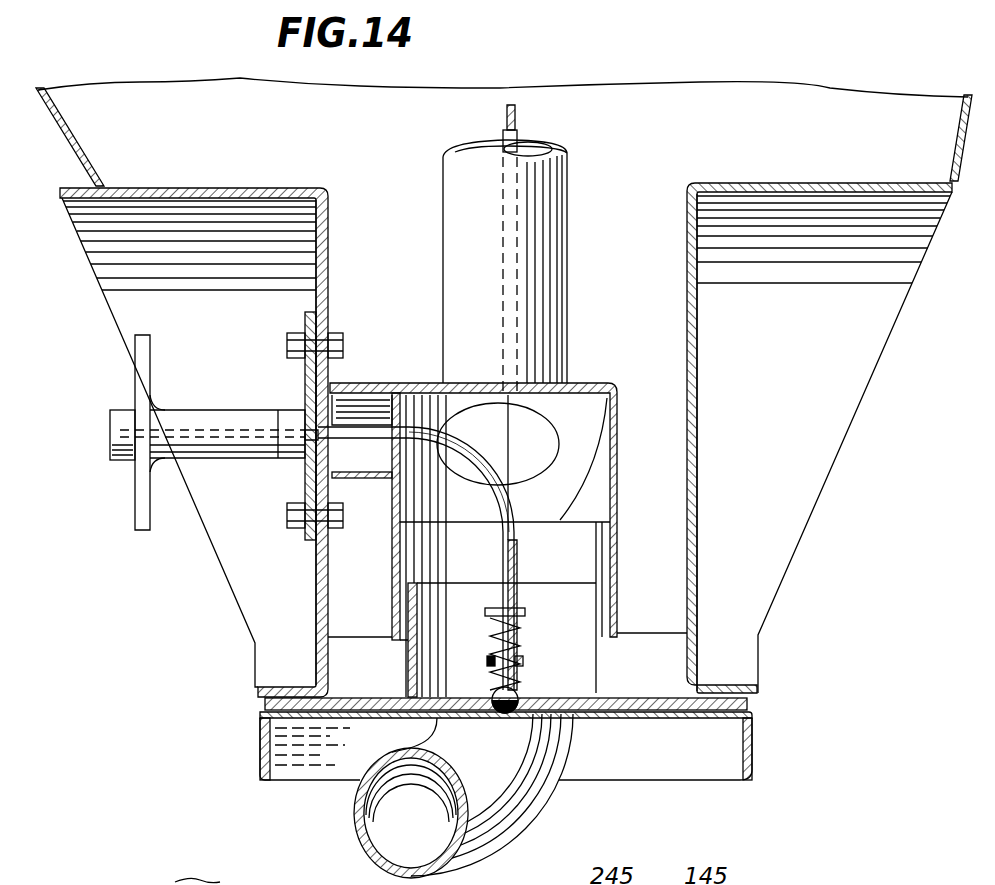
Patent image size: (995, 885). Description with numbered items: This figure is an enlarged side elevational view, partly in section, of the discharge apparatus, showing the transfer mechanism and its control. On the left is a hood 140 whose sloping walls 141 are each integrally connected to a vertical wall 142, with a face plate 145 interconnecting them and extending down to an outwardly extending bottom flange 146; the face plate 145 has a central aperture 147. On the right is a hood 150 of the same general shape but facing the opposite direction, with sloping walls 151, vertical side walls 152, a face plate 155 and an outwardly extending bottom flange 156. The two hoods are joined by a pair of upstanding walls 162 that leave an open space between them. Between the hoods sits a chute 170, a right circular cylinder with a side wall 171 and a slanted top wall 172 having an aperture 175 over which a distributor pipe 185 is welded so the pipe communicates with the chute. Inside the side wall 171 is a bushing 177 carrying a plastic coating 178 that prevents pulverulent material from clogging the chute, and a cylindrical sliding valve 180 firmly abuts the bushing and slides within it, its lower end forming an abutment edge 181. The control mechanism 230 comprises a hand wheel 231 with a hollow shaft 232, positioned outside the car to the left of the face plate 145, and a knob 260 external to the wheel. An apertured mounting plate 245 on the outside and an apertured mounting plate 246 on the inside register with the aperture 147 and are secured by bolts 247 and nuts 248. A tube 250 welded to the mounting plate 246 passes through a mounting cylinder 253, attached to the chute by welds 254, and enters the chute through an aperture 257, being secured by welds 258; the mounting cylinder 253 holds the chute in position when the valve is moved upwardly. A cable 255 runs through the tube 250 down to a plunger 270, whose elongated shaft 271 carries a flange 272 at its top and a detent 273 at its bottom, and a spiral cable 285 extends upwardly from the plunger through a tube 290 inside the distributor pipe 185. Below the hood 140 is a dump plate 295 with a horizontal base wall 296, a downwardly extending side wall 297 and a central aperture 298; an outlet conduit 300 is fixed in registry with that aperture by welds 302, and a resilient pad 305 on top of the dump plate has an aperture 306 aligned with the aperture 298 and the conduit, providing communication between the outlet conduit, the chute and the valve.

The hood 140 is at (245, 168).
The sloping walls 141 is at (235, 256).
The vertical wall 142 is at (267, 548).
The face plate 145 is at (330, 262).
The bottom flange 146 is at (265, 690).
The aperture 147 is at (338, 400).
The hood 150 is at (858, 168).
The sloping walls 151 is at (829, 263).
The vertical side wall 152 is at (783, 483).
The face plate 155 is at (697, 352).
The bottom flange 156 is at (757, 683).
The upstanding walls 162 is at (377, 673).
The chute 170 is at (622, 368).
The side wall 171 is at (620, 577).
The slanted top wall 172 is at (620, 407).
The aperture 175 is at (553, 462).
The bushing 177 is at (605, 536).
The coating 178 is at (605, 512).
The sliding valve 180 is at (392, 600).
The abutment edge 181 is at (617, 718).
The distributor pipe 185 is at (553, 287).
The control mechanism 230 is at (243, 366).
The hand wheel 231 is at (143, 522).
The hollow shaft 232 is at (207, 415).
The apertured mounting plate 245 is at (305, 382).
The apertured mounting plate 246 is at (332, 326).
The bolts 247 is at (343, 340).
The nuts 248 is at (298, 332).
The tube 250 is at (405, 406).
The mounting cylinder 253 is at (356, 468).
The welds 254 is at (392, 482).
The cable 255 is at (236, 440).
The aperture 257 is at (420, 452).
The welds 258 is at (403, 393).
The knob 260 is at (120, 410).
The plunger 270 is at (538, 634).
The elongated shaft 271 is at (500, 683).
The flange 272 is at (486, 612).
The detent 273 is at (522, 690).
The spiral cable 285 is at (517, 116).
The tube 290 is at (500, 444).
The dump plate 295 is at (768, 726).
The base wall 296 is at (712, 720).
The side wall 297 is at (262, 764).
The aperture 298 is at (576, 738).
The outlet conduit 300 is at (540, 822).
The welds 302 is at (437, 722).
The resilient pad 305 is at (262, 706).
The aperture 306 is at (487, 710).